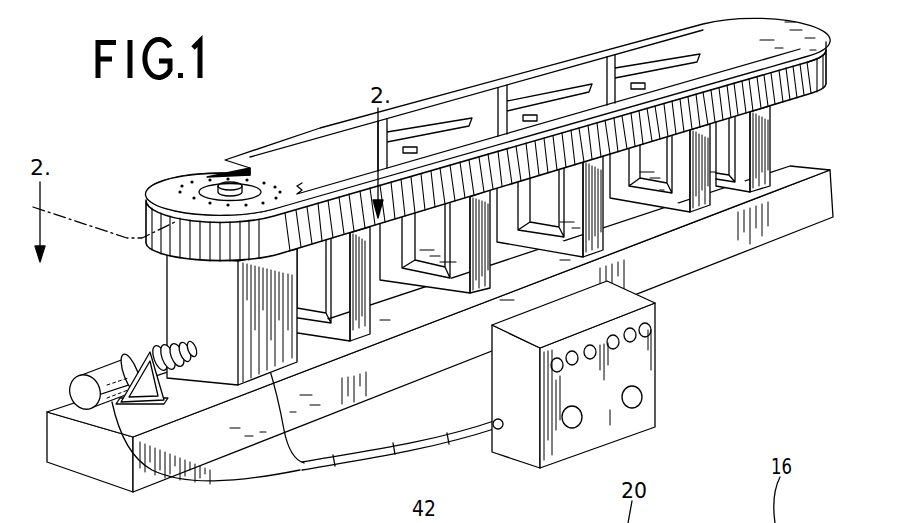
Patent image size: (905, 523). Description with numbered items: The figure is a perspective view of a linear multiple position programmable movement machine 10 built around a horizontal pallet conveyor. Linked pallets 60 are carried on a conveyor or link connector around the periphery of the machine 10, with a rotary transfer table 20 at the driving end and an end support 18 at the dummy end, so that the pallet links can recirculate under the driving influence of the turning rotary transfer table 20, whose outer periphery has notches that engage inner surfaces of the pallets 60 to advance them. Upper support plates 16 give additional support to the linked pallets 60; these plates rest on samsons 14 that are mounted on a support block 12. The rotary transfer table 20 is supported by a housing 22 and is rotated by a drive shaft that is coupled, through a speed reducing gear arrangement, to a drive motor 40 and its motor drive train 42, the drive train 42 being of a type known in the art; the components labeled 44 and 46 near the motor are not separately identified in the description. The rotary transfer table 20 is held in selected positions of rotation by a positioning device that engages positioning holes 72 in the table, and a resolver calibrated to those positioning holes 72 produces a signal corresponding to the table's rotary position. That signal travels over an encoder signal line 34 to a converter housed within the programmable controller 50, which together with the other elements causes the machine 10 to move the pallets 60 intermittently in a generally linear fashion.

The linear multiple position programmable movement machine 10 is at (505, 68).
The support block 12 is at (785, 222).
The samsons 14 is at (478, 262).
The upper support plates 16 is at (622, 92).
The end support 18 is at (793, 33).
The rotary transfer table 20 is at (170, 186).
The housing 22 is at (175, 292).
The encoder signal line 34 is at (302, 444).
The drive motor 40 is at (84, 358).
The motor drive train 42 is at (172, 376).
The coupling bracket 44 is at (128, 349).
The motor cable 46 is at (302, 481).
The programmable controller 50 is at (663, 336).
The pallets 60 is at (749, 89).
The positioning holes 72 is at (545, 522).